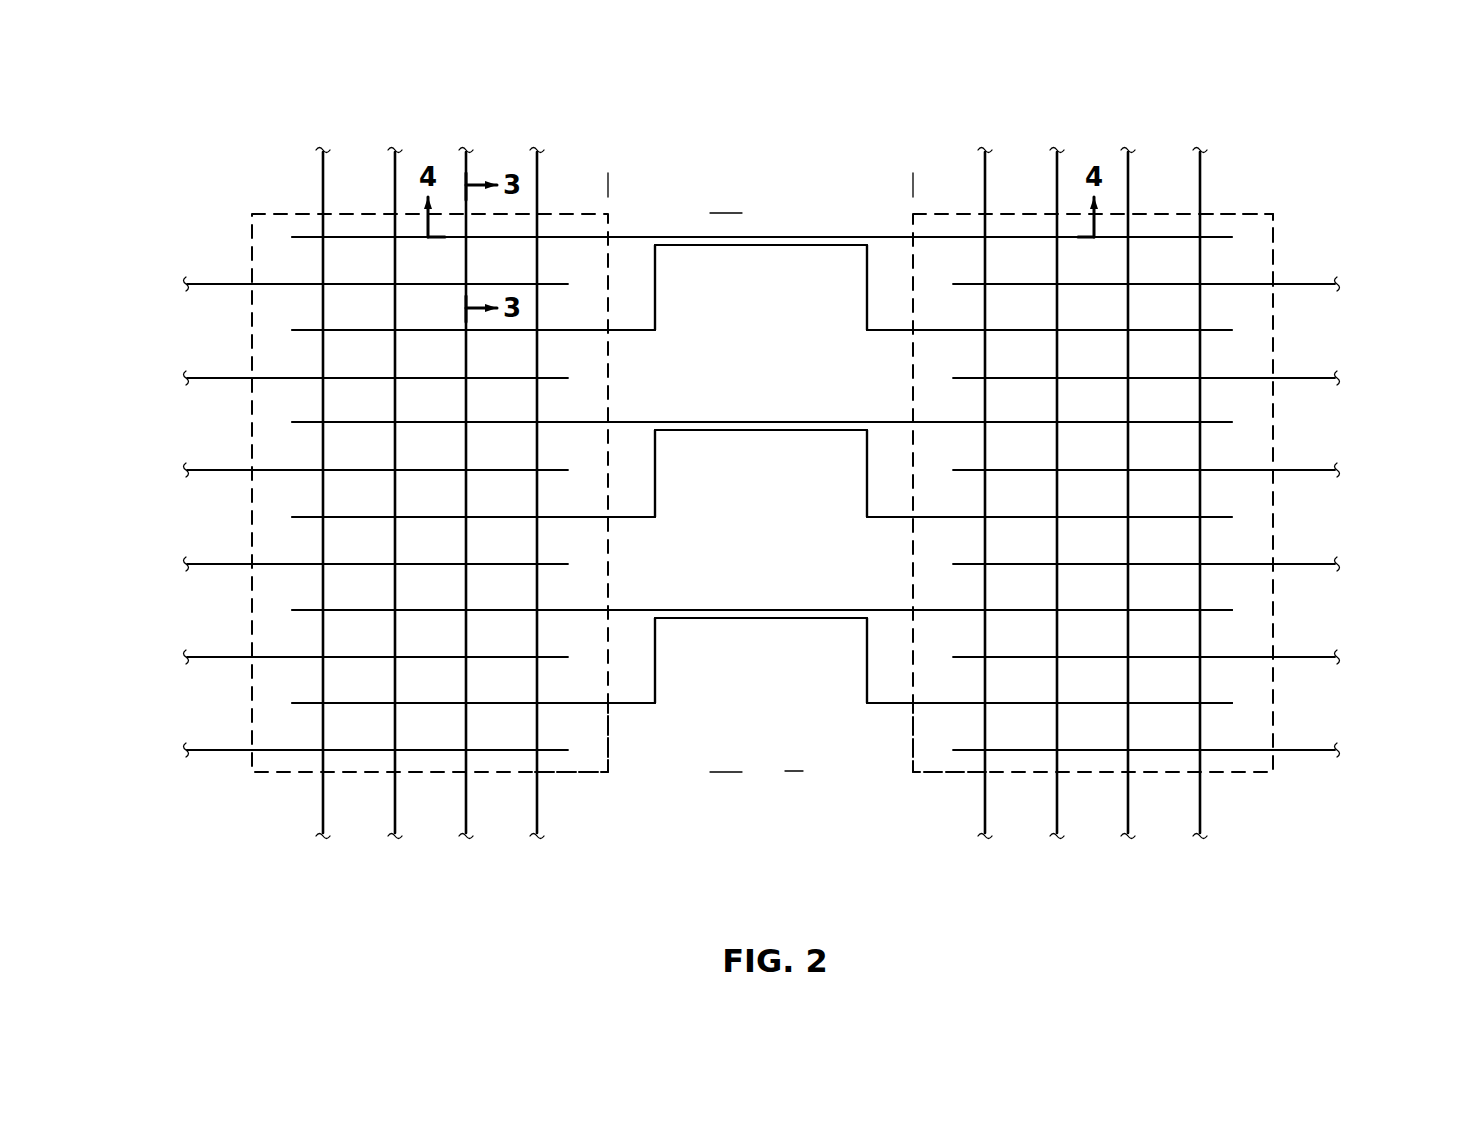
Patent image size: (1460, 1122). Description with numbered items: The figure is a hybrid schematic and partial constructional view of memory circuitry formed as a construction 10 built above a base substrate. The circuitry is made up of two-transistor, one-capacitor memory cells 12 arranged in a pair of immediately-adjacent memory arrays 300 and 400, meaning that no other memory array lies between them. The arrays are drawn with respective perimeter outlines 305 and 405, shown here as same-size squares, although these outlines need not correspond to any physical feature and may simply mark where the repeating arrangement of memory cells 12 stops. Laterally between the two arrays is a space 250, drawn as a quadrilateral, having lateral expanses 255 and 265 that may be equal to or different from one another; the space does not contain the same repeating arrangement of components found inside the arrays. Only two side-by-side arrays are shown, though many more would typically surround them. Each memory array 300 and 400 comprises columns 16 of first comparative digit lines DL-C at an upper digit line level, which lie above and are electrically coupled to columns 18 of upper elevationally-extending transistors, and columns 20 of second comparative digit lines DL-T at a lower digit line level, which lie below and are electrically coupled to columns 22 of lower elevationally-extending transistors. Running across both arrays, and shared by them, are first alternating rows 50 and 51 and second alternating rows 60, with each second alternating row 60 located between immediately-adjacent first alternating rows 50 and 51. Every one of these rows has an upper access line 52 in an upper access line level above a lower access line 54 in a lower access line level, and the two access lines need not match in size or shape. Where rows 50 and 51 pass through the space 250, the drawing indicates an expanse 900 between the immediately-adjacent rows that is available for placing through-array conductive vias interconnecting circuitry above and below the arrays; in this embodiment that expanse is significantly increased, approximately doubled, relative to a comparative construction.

The construction 10 is at (1362, 103).
The 2T-1C memory cell 12 is at (331, 320).
The columns of first comparative digit lines 16 is at (773, 495).
The columns of upper elevationally-extending transistors 18 is at (323, 135).
The columns of second comparative digit lines 20 is at (773, 529).
The columns of lower elevationally-extending transistors 22 is at (323, 859).
The first alternating row 50 is at (172, 237).
The first alternating row 51 is at (172, 330).
The upper access line 52 is at (719, 686).
The lower access line 54 is at (278, 752).
The second alternating row 60 is at (150, 284).
The space 250 is at (777, 133).
The lateral expanse 255 is at (911, 185).
The lateral expanse 265 is at (726, 770).
The memory array 300 is at (298, 212).
The perimeter outline 305 is at (610, 748).
The memory array 400 is at (963, 212).
The perimeter outline 405 is at (1245, 212).
The expanse 900 is at (782, 247).
The first comparative digit line DL-C is at (773, 503).
The second comparative digit line DL-T is at (322, 807).